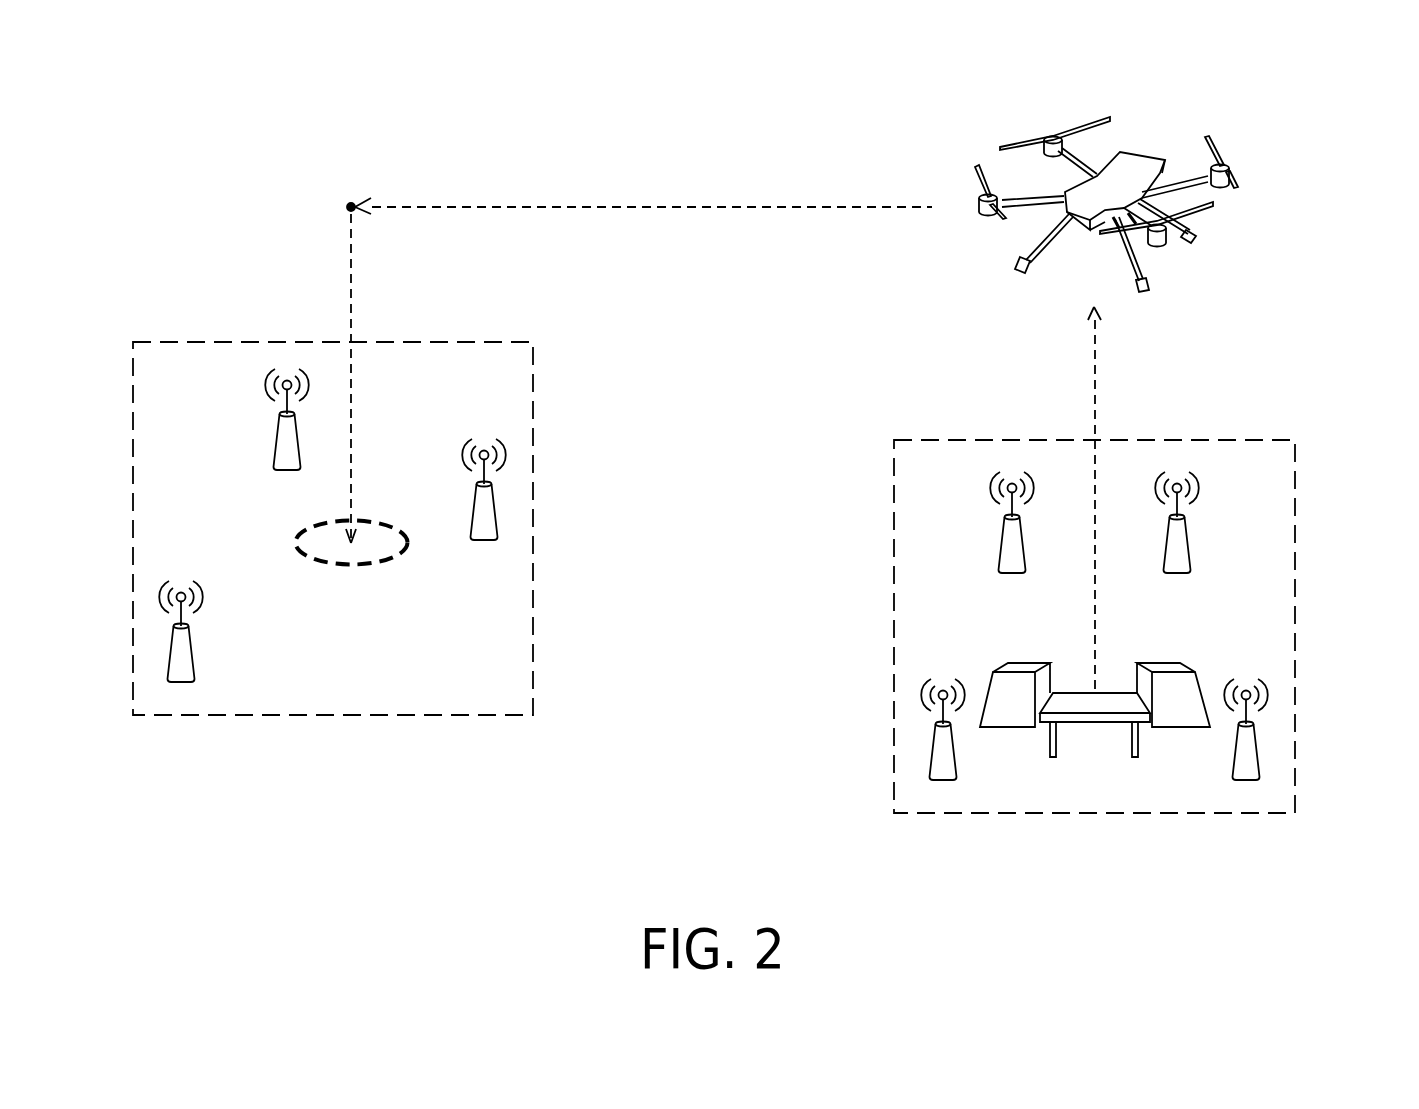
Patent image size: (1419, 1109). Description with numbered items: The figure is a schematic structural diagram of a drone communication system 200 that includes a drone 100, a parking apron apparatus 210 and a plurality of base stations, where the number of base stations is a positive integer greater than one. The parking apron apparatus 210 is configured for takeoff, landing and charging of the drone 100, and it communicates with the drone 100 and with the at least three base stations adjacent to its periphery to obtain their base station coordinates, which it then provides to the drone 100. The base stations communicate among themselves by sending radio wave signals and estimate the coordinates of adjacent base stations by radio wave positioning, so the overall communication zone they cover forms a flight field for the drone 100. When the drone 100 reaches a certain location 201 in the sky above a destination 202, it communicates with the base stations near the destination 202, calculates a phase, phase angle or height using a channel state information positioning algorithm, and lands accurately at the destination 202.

The drone 100 is at (1150, 160).
The drone communication system 200 is at (1392, 900).
The location 201 is at (351, 205).
The destination 202 is at (403, 553).
The parking apron apparatus 210 is at (1078, 726).